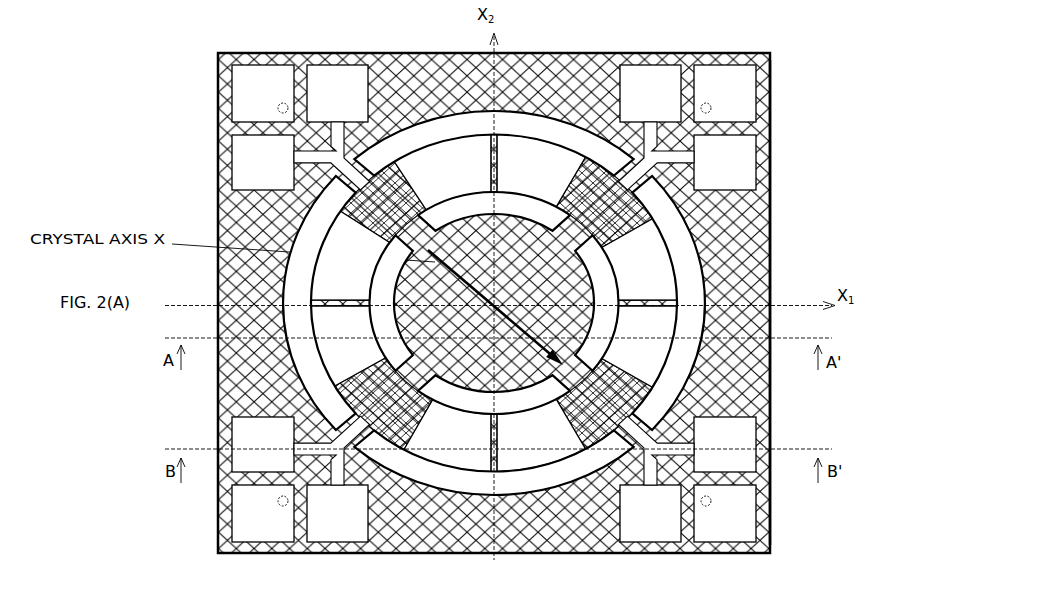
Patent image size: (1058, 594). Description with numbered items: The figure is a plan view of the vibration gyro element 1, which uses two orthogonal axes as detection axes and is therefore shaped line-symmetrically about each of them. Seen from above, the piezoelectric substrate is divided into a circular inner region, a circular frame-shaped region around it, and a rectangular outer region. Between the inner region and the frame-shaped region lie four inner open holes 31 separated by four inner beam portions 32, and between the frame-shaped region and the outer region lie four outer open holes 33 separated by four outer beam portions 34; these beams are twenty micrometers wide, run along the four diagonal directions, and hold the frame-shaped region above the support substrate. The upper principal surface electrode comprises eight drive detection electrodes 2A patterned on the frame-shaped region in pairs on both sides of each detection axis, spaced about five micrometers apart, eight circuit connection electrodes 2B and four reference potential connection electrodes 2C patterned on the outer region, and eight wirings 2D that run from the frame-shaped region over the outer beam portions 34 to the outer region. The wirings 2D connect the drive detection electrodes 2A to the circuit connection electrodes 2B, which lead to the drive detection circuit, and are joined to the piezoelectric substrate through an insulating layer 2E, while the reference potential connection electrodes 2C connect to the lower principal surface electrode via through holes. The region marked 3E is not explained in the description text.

The vibration gyro element 1 is at (760, 53).
The drive detection electrodes 2A is at (565, 305).
The circuit connection electrodes 2B is at (658, 533).
The reference potential connection electrodes 2C is at (735, 533).
The wirings 2D is at (370, 135).
The insulating layer 2E is at (729, 288).
The inner open holes 31 is at (501, 421).
The inner beam portions 32 is at (582, 390).
The outer open holes 33 is at (500, 501).
The outer beam portions 34 is at (372, 152).
The wedge electrode portion 3E is at (592, 216).